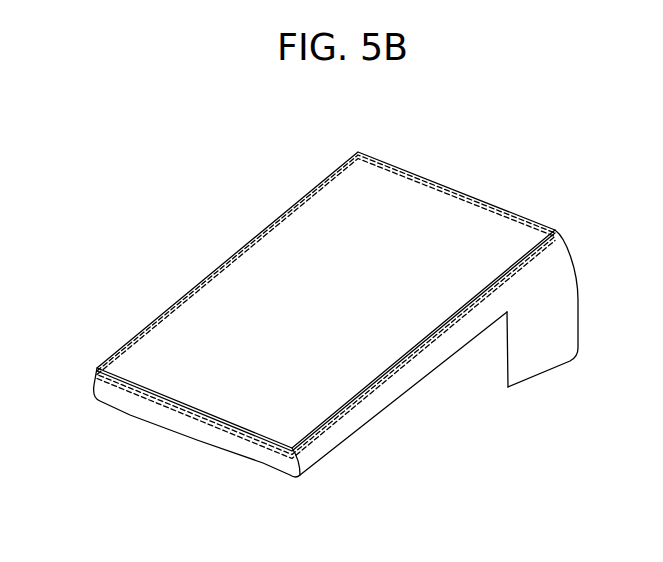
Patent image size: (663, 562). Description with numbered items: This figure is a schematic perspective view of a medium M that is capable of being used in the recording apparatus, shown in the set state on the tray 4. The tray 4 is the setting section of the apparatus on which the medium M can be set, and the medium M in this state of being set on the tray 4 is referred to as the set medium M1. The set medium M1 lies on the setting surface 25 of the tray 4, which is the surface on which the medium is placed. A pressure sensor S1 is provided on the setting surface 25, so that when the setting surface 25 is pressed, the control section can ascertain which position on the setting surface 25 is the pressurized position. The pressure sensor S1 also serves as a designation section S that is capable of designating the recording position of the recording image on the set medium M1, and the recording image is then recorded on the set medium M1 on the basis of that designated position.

The tray 4 is at (270, 225).
The setting surface 25 is at (326, 281).
The designation section S is at (326, 281).
The pressure sensor S1 is at (410, 190).
The medium M is at (326, 301).
The set medium M1 is at (313, 372).